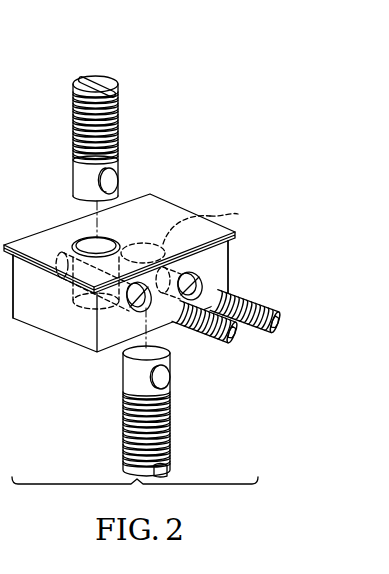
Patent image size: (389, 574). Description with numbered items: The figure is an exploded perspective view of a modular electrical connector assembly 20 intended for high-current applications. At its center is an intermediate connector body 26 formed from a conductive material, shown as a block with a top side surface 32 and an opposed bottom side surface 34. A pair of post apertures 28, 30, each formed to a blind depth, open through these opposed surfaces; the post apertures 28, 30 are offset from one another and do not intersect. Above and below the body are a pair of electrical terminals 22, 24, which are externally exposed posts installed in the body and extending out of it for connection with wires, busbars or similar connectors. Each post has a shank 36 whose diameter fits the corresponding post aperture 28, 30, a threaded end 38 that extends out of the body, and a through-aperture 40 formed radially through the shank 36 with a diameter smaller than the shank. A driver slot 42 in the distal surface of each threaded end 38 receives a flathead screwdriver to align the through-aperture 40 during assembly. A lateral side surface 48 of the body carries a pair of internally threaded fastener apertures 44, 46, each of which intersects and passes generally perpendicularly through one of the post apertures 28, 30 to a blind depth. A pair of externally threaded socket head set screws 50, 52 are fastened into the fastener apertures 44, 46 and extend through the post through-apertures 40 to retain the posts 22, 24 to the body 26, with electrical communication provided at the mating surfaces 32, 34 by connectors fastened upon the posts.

The electrical connector assembly 20 is at (135, 494).
The electrical terminal 22 is at (124, 88).
The electrical terminal 24 is at (174, 416).
The connector body 26 is at (146, 277).
The post aperture 28 is at (74, 244).
The post aperture 30 is at (234, 210).
The top side surface 32 is at (163, 225).
The bottom side surface 34 is at (48, 322).
The shank 36 is at (73, 176).
The threaded end 38 is at (120, 110).
The through-aperture 40 is at (118, 181).
The driver slot 42 is at (95, 81).
The fastener aperture 44 is at (143, 313).
The fastener aperture 46 is at (203, 275).
The lateral side surface 48 is at (212, 258).
The socket head set screw 50 is at (233, 341).
The socket head set screw 52 is at (258, 330).